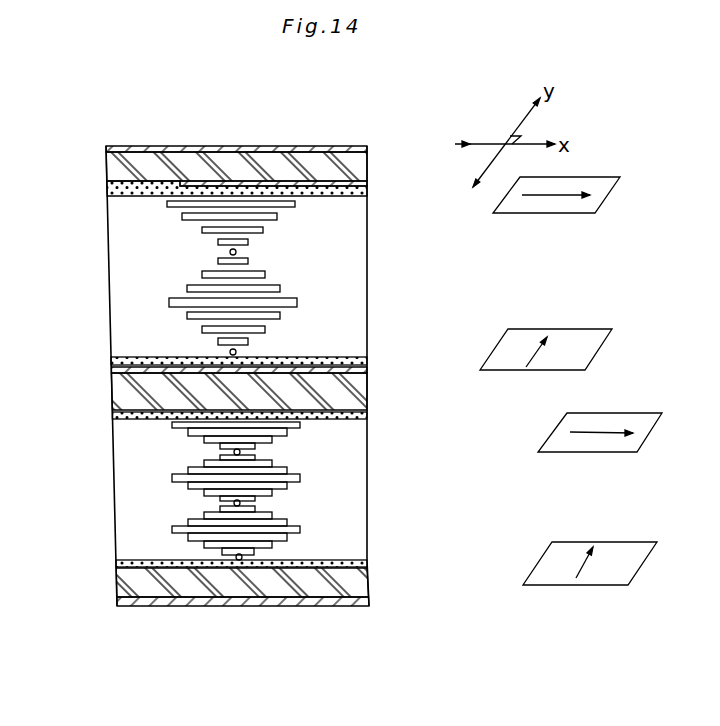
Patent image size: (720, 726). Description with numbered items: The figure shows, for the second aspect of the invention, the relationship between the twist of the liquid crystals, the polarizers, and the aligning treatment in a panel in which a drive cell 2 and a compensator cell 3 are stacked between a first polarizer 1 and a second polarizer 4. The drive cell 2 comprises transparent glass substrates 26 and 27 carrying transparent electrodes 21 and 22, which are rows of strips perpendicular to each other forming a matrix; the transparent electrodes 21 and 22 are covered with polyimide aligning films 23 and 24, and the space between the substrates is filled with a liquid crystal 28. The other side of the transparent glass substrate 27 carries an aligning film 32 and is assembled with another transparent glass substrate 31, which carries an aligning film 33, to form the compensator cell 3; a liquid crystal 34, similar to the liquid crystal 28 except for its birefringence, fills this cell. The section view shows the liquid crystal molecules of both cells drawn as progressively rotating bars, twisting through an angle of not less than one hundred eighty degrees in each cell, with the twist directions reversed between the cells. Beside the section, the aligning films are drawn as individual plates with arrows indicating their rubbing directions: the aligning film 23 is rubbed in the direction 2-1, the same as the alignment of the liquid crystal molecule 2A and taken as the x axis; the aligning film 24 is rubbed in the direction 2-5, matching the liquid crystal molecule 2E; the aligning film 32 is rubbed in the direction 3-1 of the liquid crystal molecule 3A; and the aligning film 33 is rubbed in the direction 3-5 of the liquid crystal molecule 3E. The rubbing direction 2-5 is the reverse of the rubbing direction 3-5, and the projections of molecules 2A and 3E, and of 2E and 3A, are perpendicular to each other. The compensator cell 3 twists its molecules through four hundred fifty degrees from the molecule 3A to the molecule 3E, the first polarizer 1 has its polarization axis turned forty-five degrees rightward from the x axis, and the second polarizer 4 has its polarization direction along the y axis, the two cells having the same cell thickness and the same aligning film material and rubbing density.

The first polarizer 1 is at (367, 147).
The transparent glass substrate 26 is at (108, 178).
The transparent electrode 21 is at (280, 184).
The aligning film 23 is at (367, 192).
The rubbing direction 2-1 is at (568, 197).
The drive cell 2 is at (48, 154).
The liquid crystal molecule 2A is at (167, 203).
The liquid crystal 28 is at (315, 283).
The liquid crystal molecule 2E is at (230, 352).
The aligning film 24 is at (367, 357).
The rubbing direction 2-5 is at (540, 347).
The transparent electrode 22 is at (367, 371).
The transparent glass substrate 27 is at (118, 400).
The aligning film 32 is at (367, 415).
The rubbing direction 3-1 is at (612, 432).
The compensator cell 3 is at (50, 597).
The liquid crystal molecule 3A is at (172, 424).
The liquid crystal 34 is at (315, 488).
The liquid crystal molecule 3E is at (236, 557).
The aligning film 33 is at (367, 563).
The rubbing direction 3-5 is at (580, 567).
The transparent glass substrate 31 is at (120, 585).
The second polarizer 4 is at (369, 600).